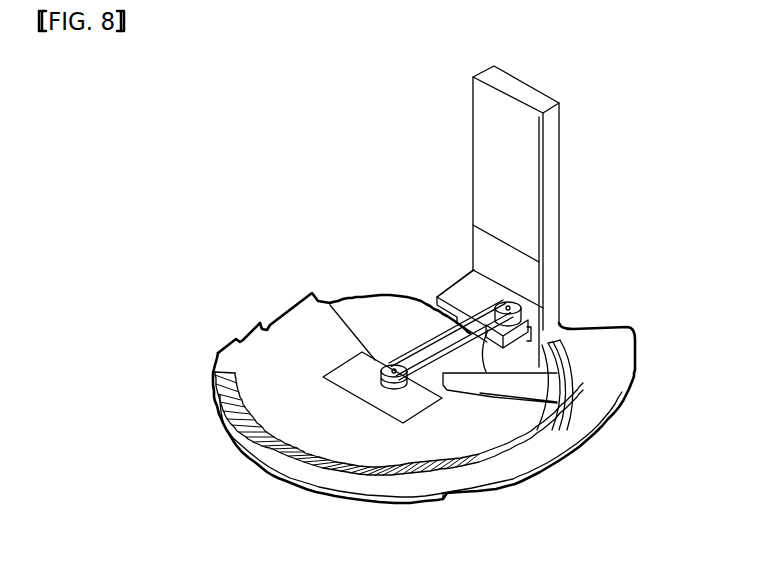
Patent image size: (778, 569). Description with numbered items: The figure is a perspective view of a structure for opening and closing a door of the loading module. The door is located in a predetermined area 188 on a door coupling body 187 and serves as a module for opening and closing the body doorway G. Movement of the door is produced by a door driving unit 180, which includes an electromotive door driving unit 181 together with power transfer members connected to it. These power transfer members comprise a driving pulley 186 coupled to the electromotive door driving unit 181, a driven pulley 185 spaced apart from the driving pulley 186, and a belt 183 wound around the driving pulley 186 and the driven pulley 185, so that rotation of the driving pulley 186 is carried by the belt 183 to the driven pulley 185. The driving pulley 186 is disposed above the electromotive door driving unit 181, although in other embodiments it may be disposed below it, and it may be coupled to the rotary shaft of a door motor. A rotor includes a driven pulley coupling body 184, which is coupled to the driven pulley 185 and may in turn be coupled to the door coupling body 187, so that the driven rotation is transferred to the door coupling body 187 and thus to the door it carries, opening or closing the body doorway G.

The door driving unit 180 is at (267, 265).
The electromotive door driving unit 181 is at (462, 300).
The belt 183 is at (443, 366).
The driven pulley coupling body 184 is at (492, 382).
The driven pulley 185 is at (390, 366).
The driving pulley 186 is at (508, 302).
The door coupling body 187 is at (543, 423).
The predetermined area 188 is at (215, 371).
The body doorway G is at (308, 466).